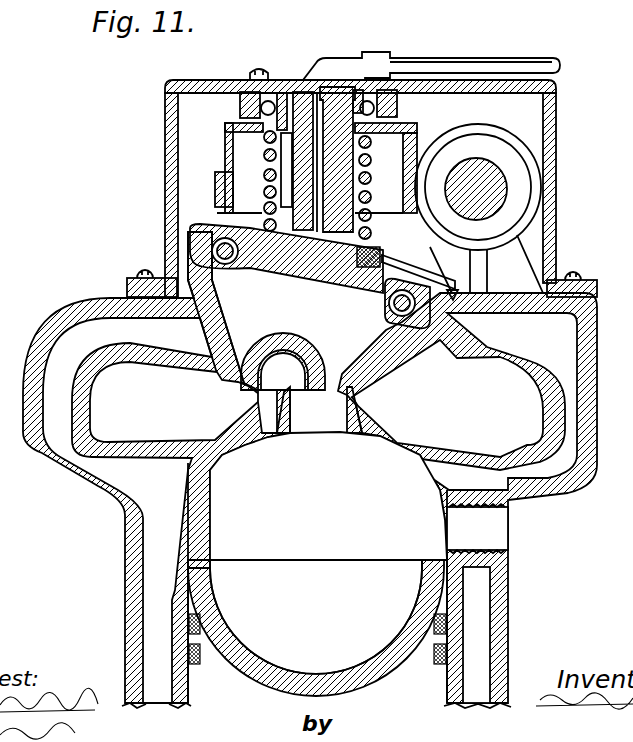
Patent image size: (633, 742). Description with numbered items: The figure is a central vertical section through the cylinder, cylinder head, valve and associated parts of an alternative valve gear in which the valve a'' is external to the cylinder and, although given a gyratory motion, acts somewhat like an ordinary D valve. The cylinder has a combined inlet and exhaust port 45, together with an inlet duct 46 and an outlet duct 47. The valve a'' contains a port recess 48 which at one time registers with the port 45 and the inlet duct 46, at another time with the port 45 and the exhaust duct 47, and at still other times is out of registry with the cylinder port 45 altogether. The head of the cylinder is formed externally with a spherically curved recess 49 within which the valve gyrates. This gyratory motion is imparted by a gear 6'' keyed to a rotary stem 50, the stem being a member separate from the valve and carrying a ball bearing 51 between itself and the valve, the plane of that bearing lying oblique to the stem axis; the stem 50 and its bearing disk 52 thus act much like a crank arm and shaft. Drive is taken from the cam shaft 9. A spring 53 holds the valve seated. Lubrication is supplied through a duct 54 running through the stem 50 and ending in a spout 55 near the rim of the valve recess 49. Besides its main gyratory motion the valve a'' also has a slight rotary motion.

The gear 6'' is at (362, 175).
The cam shaft 9 is at (480, 183).
The combined inlet and exhaust port 45 is at (320, 413).
The inlet duct 46 is at (467, 498).
The outlet duct 47 is at (176, 402).
The port recess 48 is at (288, 367).
The spherically curved recess 49 is at (193, 335).
The rotary stem 50 is at (262, 158).
The ball bearing 51 is at (398, 312).
The bearing disk 52 is at (280, 246).
The spring 53 is at (368, 165).
The duct 54 is at (318, 270).
The spout 55 is at (397, 267).
The valve a'' is at (229, 307).